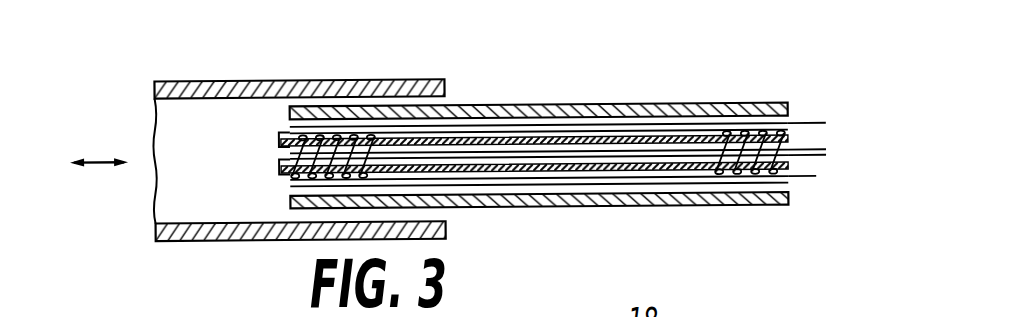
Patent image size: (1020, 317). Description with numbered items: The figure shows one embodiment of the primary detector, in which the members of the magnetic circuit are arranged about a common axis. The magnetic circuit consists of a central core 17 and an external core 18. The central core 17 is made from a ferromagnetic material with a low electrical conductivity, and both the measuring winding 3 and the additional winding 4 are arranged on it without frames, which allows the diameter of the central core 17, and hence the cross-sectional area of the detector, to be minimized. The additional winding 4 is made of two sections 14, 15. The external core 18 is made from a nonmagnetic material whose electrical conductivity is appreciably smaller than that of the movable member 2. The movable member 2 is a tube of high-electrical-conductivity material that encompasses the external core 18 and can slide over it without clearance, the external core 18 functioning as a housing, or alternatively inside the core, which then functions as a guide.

The movable member 2 is at (274, 80).
The external core 18 is at (508, 106).
The measuring winding 3 is at (750, 180).
The central core 17 is at (288, 182).
The section of additional winding 14 is at (814, 150).
The section of additional winding 15 is at (803, 157).
The additional winding 4 is at (842, 148).